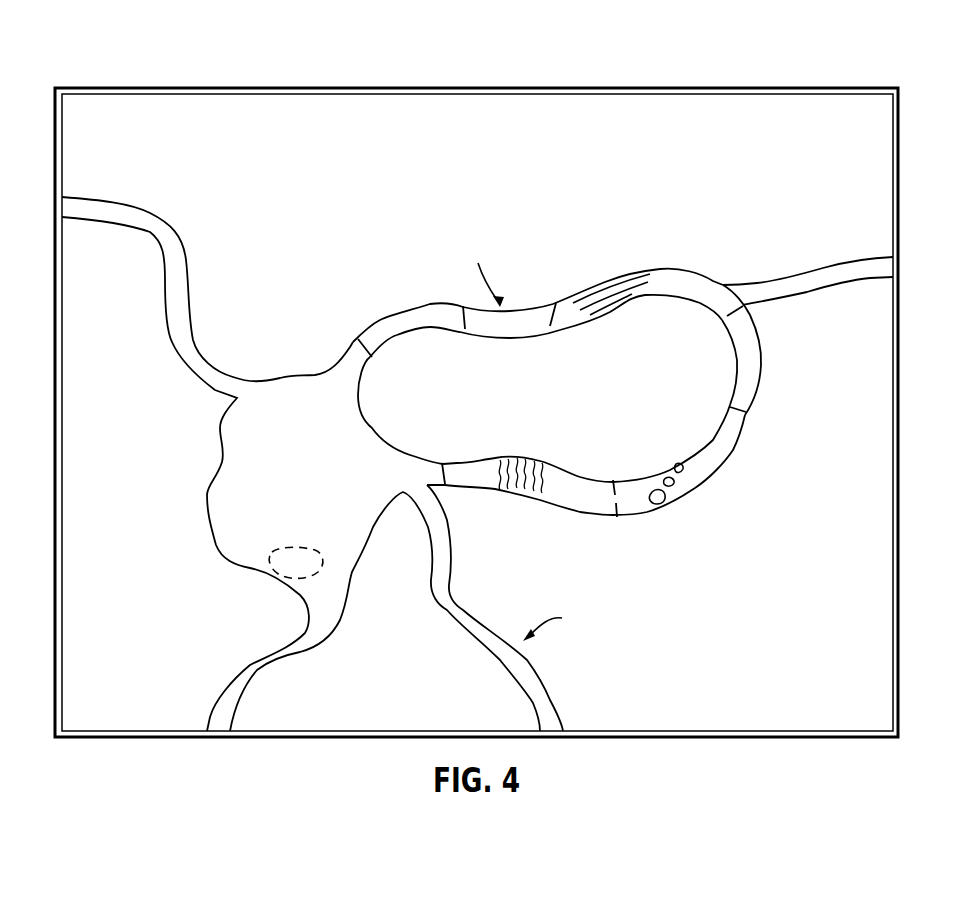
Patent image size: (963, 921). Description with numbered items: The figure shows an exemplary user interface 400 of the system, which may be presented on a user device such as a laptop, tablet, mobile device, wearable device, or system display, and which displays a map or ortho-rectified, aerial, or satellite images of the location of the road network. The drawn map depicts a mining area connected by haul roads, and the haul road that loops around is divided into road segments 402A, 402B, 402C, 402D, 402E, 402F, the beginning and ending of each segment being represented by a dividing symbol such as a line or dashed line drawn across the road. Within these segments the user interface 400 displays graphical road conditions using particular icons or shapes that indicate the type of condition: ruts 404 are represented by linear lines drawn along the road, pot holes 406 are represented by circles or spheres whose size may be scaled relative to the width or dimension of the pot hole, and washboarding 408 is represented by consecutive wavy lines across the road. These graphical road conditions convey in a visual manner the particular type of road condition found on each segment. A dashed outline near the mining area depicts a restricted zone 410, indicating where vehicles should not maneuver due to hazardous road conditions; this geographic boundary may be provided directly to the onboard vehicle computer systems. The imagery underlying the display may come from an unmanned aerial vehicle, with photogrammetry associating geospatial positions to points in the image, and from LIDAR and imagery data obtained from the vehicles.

The user interface 400 is at (115, 40).
The road segment 402A is at (392, 337).
The road segment 402B is at (513, 330).
The road segment 402C is at (614, 298).
The road segment 402D is at (745, 363).
The road segment 402E is at (687, 460).
The road segment 402F is at (470, 465).
The ruts 404 is at (616, 273).
The pot holes 406 is at (680, 477).
The washboarding 408 is at (523, 490).
The restricted zone 410 is at (278, 571).